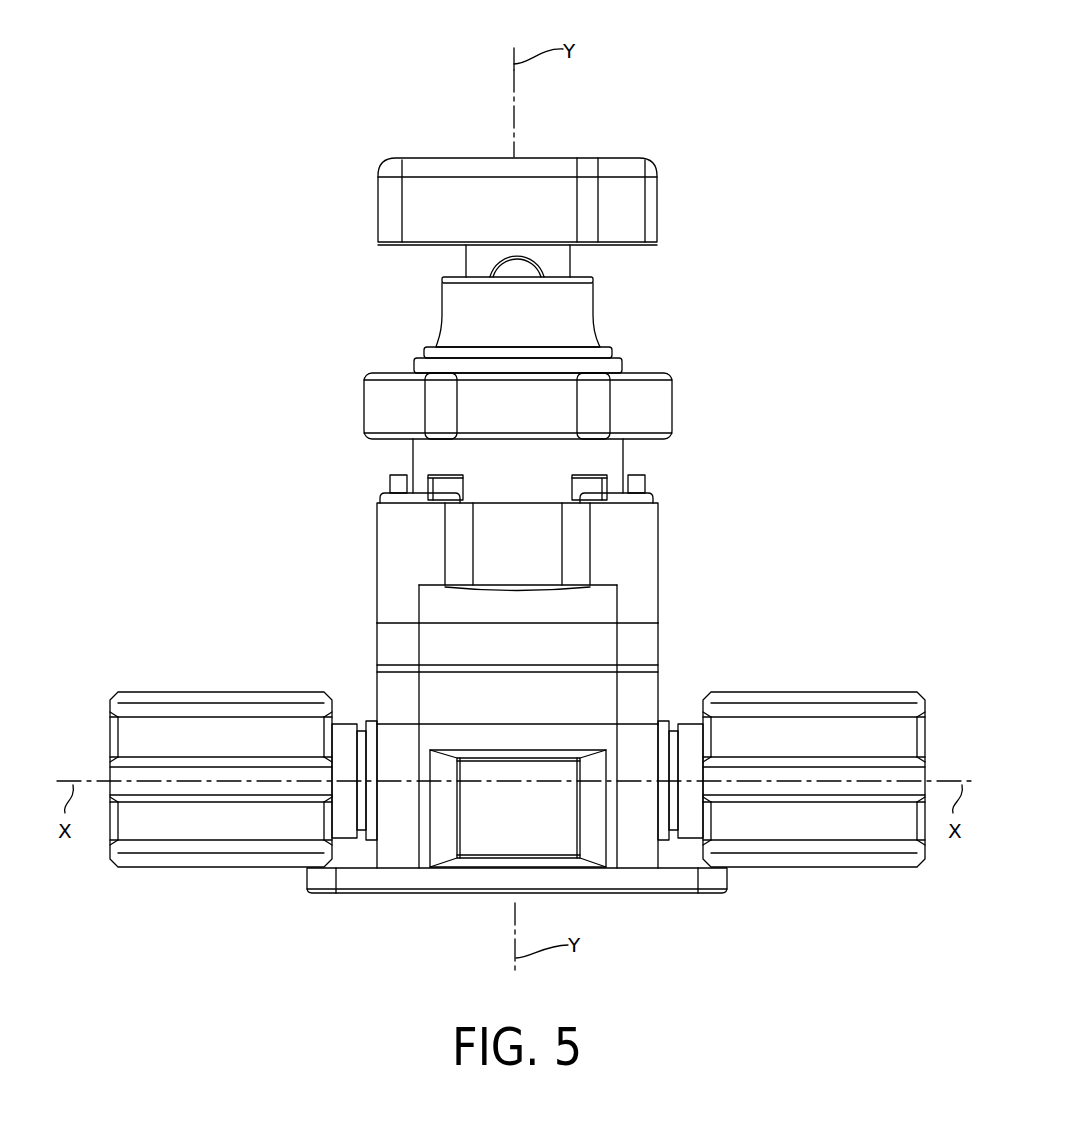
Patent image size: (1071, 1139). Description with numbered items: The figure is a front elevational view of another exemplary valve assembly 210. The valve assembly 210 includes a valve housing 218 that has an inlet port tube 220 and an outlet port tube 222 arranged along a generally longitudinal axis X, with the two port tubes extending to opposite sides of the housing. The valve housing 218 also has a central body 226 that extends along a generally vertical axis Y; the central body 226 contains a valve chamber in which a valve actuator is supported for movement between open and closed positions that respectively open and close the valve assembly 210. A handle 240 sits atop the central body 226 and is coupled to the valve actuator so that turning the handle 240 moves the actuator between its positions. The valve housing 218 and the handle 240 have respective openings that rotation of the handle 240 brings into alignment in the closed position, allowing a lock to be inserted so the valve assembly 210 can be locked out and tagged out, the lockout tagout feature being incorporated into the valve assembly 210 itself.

The valve assembly 210 is at (755, 86).
The handle 240 is at (430, 175).
The central body 226 is at (660, 535).
The valve housing 218 is at (658, 577).
The inlet port tube 220 is at (195, 720).
The outlet port tube 222 is at (858, 740).